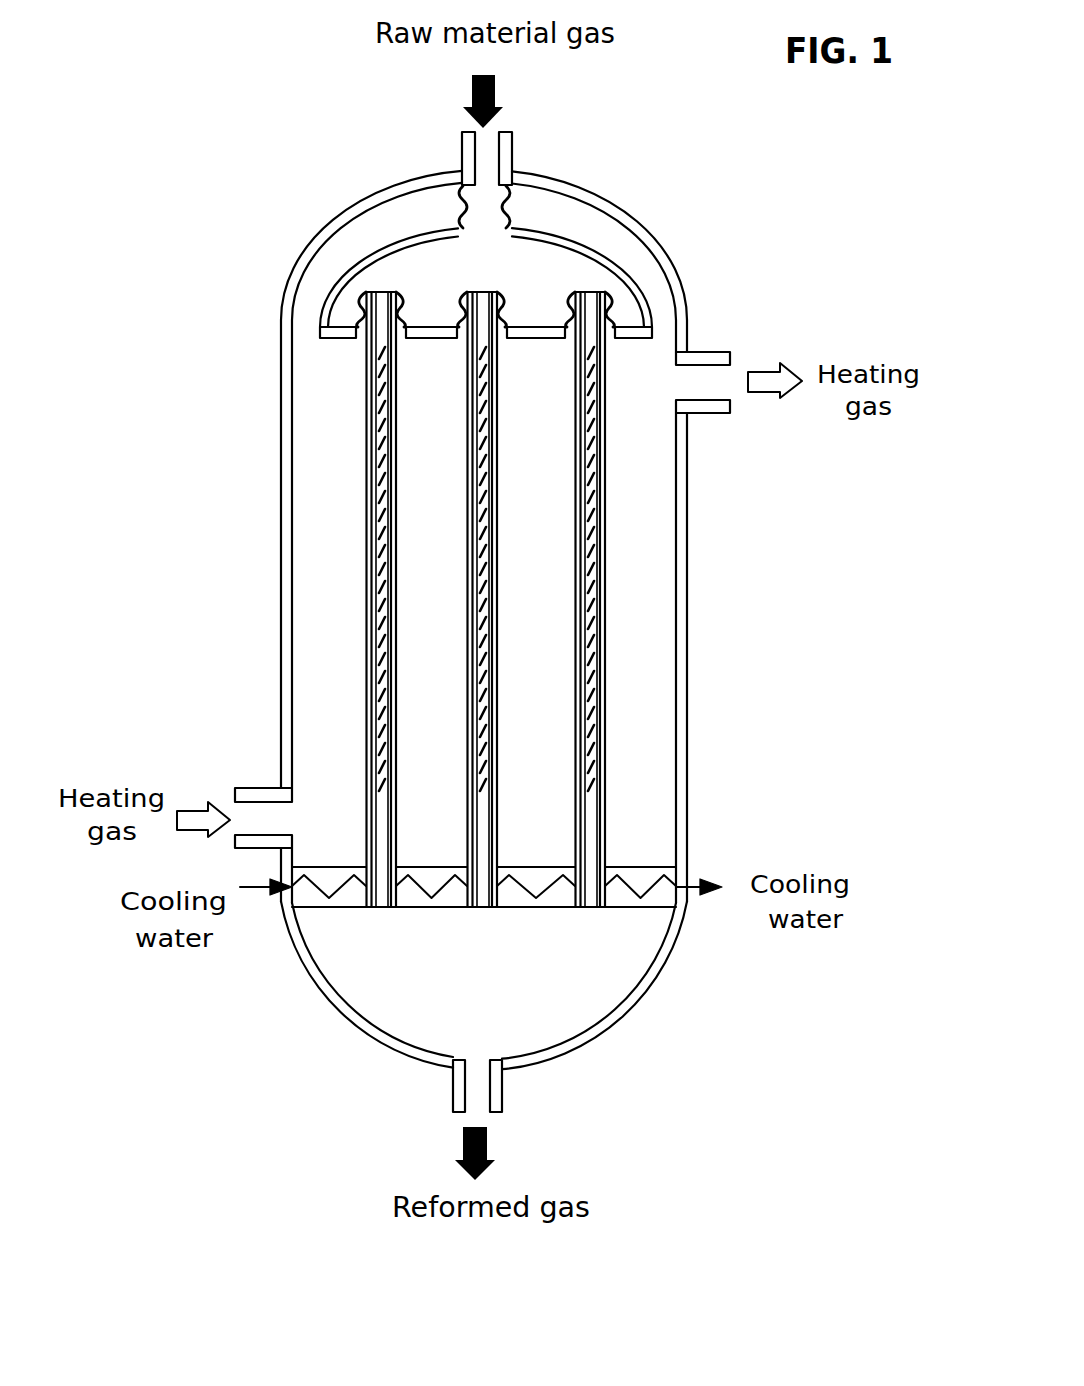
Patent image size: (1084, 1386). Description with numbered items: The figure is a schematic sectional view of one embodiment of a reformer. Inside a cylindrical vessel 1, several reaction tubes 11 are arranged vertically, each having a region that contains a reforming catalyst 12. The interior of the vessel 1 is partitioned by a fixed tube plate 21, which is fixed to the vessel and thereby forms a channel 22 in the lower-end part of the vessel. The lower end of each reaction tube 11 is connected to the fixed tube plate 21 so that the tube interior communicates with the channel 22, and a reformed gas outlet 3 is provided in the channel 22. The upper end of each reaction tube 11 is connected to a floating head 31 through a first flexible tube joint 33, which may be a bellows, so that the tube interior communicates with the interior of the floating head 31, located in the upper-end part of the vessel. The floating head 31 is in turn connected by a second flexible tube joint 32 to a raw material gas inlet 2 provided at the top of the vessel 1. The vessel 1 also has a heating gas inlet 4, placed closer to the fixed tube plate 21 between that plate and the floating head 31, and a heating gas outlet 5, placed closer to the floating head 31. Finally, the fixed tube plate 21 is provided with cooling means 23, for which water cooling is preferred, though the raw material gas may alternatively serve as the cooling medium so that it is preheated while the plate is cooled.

The vessel 1 is at (283, 490).
The raw material gas inlet 2 is at (460, 153).
The reformed gas outlet 3 is at (447, 1090).
The heating gas inlet 4 is at (262, 792).
The heating gas outlet 5 is at (706, 342).
The reaction tube 11 is at (605, 668).
The reforming catalyst 12 is at (600, 567).
The fixed tube plate 21 is at (652, 866).
The channel 22 is at (396, 987).
The cooling means 23 is at (628, 890).
The floating head 31 is at (342, 277).
The second flexible tube joint 32 is at (505, 208).
The first flexible tube joint 33 is at (408, 302).